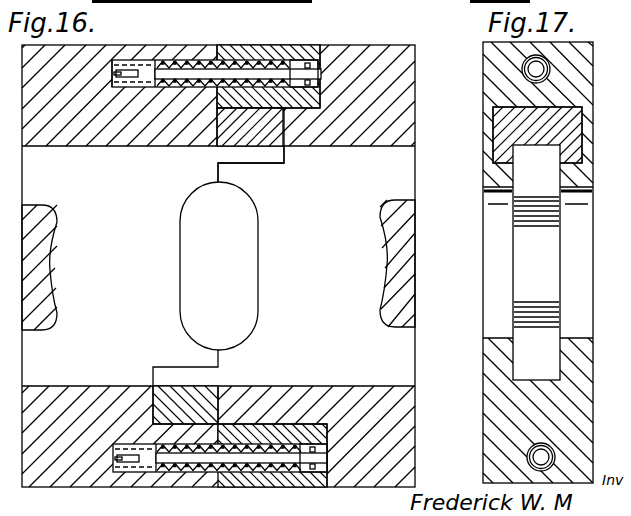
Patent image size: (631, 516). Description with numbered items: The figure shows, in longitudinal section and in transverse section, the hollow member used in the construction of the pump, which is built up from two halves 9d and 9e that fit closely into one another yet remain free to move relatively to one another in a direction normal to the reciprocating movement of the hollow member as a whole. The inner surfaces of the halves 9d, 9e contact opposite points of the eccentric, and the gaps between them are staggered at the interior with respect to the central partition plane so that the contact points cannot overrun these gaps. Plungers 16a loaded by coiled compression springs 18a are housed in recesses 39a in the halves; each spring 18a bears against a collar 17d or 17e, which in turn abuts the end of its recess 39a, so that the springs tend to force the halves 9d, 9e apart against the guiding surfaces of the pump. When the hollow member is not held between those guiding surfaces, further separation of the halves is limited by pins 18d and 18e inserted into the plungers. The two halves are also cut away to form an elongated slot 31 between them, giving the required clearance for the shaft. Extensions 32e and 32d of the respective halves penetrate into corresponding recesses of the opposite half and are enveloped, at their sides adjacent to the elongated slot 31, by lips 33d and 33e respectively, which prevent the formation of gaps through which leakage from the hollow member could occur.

In FIG. 16, the half of hollow member 9e is at (76, 143).
In FIG. 16, the half of hollow member 9d is at (406, 47).
In FIG. 16, the collar 17d is at (300, 60).
In FIG. 16, the collar 17e is at (142, 90).
In FIG. 16, the pin 18d is at (310, 63).
In FIG. 16, the pin 18e is at (124, 72).
In FIG. 16, the coiled compression spring 18a is at (270, 443).
In FIG. 16, the extension 32e is at (253, 125).
In FIG. 17, the extension 32e is at (500, 137).
In FIG. 16, the extension 32d is at (167, 402).
In FIG. 16, the lip 33d is at (225, 174).
In FIG. 17, the lip 33d is at (492, 179).
In FIG. 16, the lip 33e is at (202, 358).
In FIG. 16, the elongated slot 31 is at (250, 223).
In FIG. 16, the recess 39a is at (322, 445).
In FIG. 16, the plunger 16a is at (327, 457).